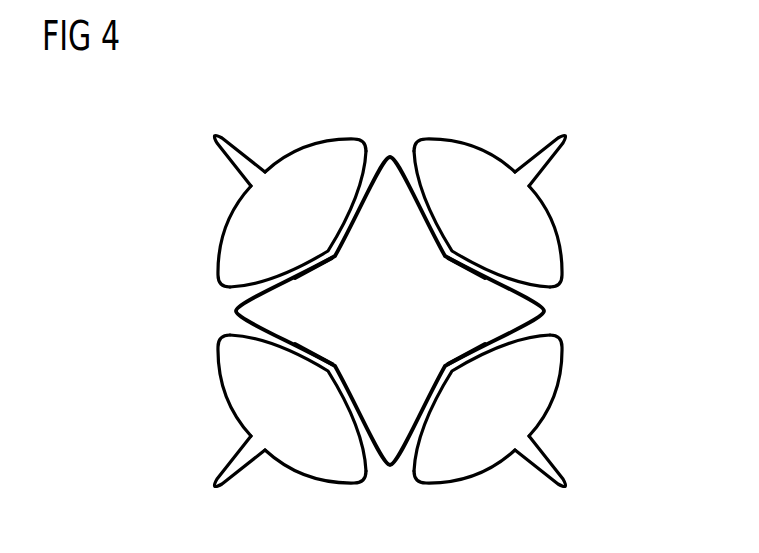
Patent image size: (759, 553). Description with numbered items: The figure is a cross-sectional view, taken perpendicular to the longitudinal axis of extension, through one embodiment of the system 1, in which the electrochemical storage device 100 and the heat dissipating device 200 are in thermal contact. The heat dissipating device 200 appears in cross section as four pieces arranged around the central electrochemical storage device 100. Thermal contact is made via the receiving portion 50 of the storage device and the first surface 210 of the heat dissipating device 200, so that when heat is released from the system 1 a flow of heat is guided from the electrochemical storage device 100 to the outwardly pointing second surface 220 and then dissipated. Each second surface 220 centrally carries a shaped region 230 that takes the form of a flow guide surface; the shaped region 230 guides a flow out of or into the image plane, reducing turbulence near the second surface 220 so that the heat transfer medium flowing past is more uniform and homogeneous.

The system 1 is at (672, 100).
The electrochemical storage device 100 is at (392, 165).
The receiving portion 50 is at (318, 264).
The heat dissipating device 200 is at (219, 272).
The first surface 210 is at (343, 225).
The second surface 220 is at (226, 218).
The shaped region 230 is at (237, 150).